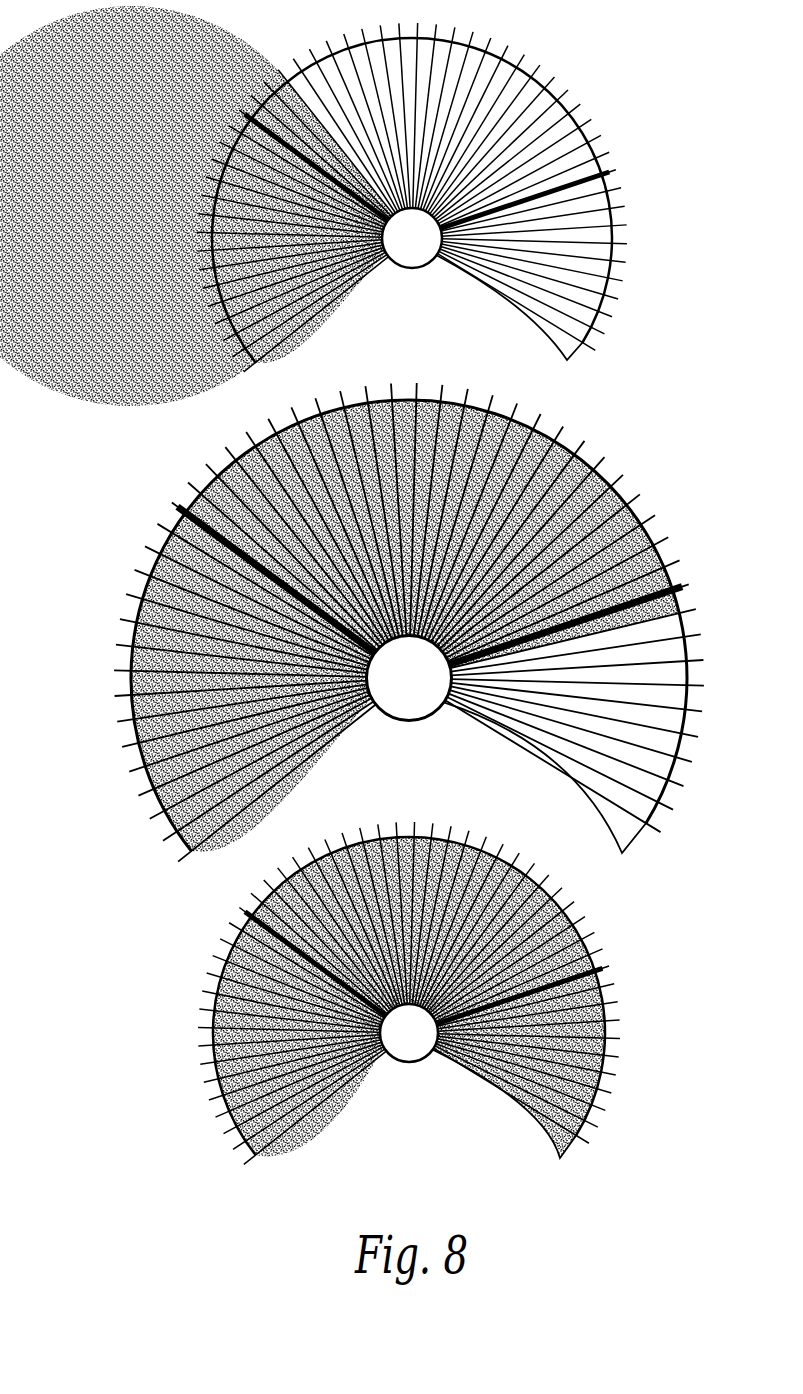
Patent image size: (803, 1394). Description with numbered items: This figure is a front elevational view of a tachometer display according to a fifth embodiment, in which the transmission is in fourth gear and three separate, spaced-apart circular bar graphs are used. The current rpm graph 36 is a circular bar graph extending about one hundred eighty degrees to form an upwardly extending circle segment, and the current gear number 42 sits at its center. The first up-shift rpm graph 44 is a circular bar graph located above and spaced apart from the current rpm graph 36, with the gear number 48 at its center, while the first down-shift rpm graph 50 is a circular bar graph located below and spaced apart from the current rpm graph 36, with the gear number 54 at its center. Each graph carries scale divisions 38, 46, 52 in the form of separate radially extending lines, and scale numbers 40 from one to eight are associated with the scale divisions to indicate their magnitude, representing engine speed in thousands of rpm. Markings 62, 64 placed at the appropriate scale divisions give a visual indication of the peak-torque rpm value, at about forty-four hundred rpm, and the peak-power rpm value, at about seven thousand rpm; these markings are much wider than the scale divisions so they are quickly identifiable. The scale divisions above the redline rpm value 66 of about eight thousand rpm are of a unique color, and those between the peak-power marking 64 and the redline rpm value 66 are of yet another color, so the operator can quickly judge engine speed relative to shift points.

The current rpm graph 36 is at (684, 742).
The scale divisions 38 is at (600, 474).
The scale numbers 40 is at (176, 150).
The current gear number 42 is at (412, 720).
The first up-shift rpm graph 44 is at (607, 282).
The scale divisions 46 is at (530, 92).
The gear number 48 is at (428, 262).
The first down-shift rpm graph 50 is at (606, 1080).
The scale divisions 52 is at (500, 858).
The gear number 54 is at (410, 1050).
The peak-torque marking 62 is at (245, 112).
The peak-power marking 64 is at (609, 170).
The redline rpm value 66 is at (474, 270).